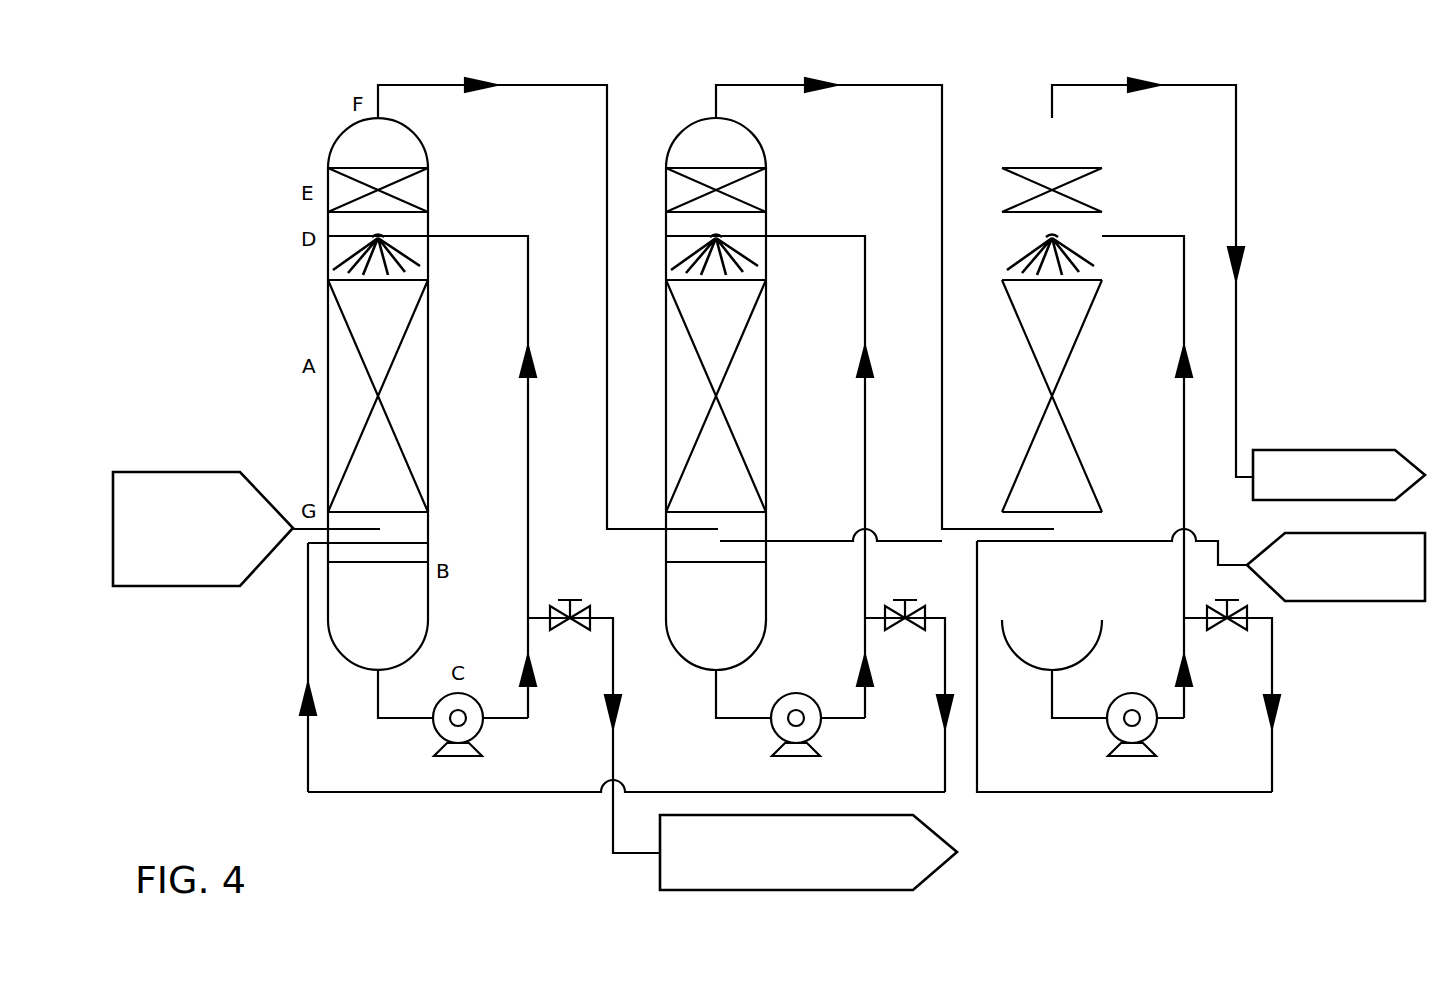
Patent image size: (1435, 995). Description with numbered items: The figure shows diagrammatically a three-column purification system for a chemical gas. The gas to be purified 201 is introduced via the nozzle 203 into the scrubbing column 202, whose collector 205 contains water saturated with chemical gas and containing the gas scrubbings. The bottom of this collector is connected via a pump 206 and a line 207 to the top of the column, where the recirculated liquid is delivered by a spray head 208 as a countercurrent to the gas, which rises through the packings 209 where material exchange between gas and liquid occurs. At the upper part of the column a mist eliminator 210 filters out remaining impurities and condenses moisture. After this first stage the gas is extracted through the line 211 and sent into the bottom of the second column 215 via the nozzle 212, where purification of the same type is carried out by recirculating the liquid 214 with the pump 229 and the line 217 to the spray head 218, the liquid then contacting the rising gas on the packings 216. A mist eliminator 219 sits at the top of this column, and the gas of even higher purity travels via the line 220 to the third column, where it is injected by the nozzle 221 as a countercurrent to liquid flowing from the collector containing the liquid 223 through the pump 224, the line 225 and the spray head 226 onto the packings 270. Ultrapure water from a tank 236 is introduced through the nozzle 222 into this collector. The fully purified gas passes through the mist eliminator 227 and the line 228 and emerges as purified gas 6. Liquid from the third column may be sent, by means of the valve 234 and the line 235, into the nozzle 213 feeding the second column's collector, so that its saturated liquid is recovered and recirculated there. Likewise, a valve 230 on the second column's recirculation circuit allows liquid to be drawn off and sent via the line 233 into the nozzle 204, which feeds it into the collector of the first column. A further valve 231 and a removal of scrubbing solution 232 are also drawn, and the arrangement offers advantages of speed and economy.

The purified gas 6 is at (1327, 450).
The gas to be purified 201 is at (186, 472).
The scrubbing column 202 is at (430, 400).
The nozzle 203 is at (380, 528).
The nozzle 204 is at (368, 548).
The collector 205 is at (410, 627).
The pump 206 is at (470, 727).
The line 207 is at (527, 478).
The spray head 208 is at (332, 238).
The packings 209 is at (413, 358).
The mist eliminator 210 is at (420, 191).
The line 211 is at (560, 85).
The nozzle 212 is at (718, 528).
The nozzle 213 is at (722, 540).
The liquid 214 is at (748, 627).
The second column 215 is at (768, 400).
The packings 216 is at (751, 358).
The line 217 is at (866, 442).
The spray head 218 is at (718, 236).
The mist eliminator 219 is at (758, 191).
The line 220 is at (930, 85).
The nozzle 221 is at (1060, 528).
The nozzle 222 is at (1065, 540).
The liquid 223 is at (1085, 627).
The pump 224 is at (1145, 727).
The line 225 is at (1183, 425).
The spray head 226 is at (1054, 236).
The mist eliminator 227 is at (1094, 191).
The line 228 is at (1219, 85).
The pump 229 is at (808, 727).
The valve 230 is at (888, 624).
The discharge valve of first column 231 is at (552, 624).
The removal of scrubbing solution 232 is at (945, 833).
The line 233 is at (717, 792).
The valve 234 is at (1215, 624).
The line 235 is at (909, 541).
The tank of ultrapure water 236 is at (1352, 602).
The packings 270 is at (1087, 358).